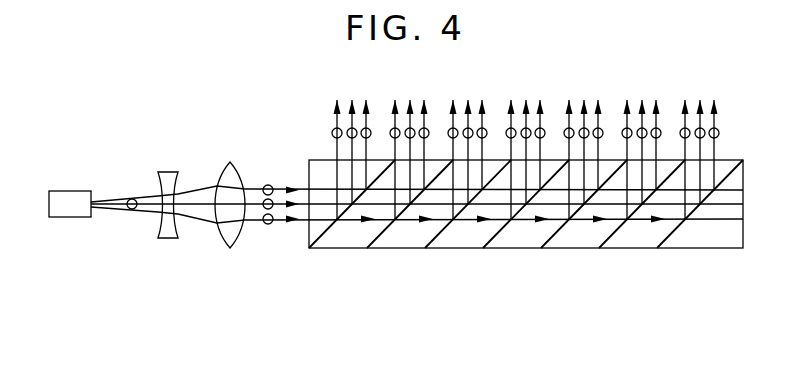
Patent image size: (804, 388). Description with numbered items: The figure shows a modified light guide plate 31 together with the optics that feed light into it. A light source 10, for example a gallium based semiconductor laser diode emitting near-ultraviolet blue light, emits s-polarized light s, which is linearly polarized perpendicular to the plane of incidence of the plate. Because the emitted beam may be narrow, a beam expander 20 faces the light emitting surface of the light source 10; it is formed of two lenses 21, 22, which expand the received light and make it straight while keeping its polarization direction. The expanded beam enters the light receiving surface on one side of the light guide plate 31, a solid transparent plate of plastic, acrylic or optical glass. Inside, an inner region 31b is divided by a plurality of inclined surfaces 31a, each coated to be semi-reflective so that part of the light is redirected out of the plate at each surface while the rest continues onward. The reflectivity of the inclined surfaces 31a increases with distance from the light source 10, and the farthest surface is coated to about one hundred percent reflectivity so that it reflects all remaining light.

The light source 10 is at (69, 191).
The s-polarized light s is at (132, 199).
The beam expander 20 is at (201, 261).
The lens 21 is at (168, 238).
The lens 22 is at (230, 234).
The light guide plate 31 is at (526, 263).
The inclined surfaces 31a is at (465, 213).
The inner region 31b is at (475, 238).